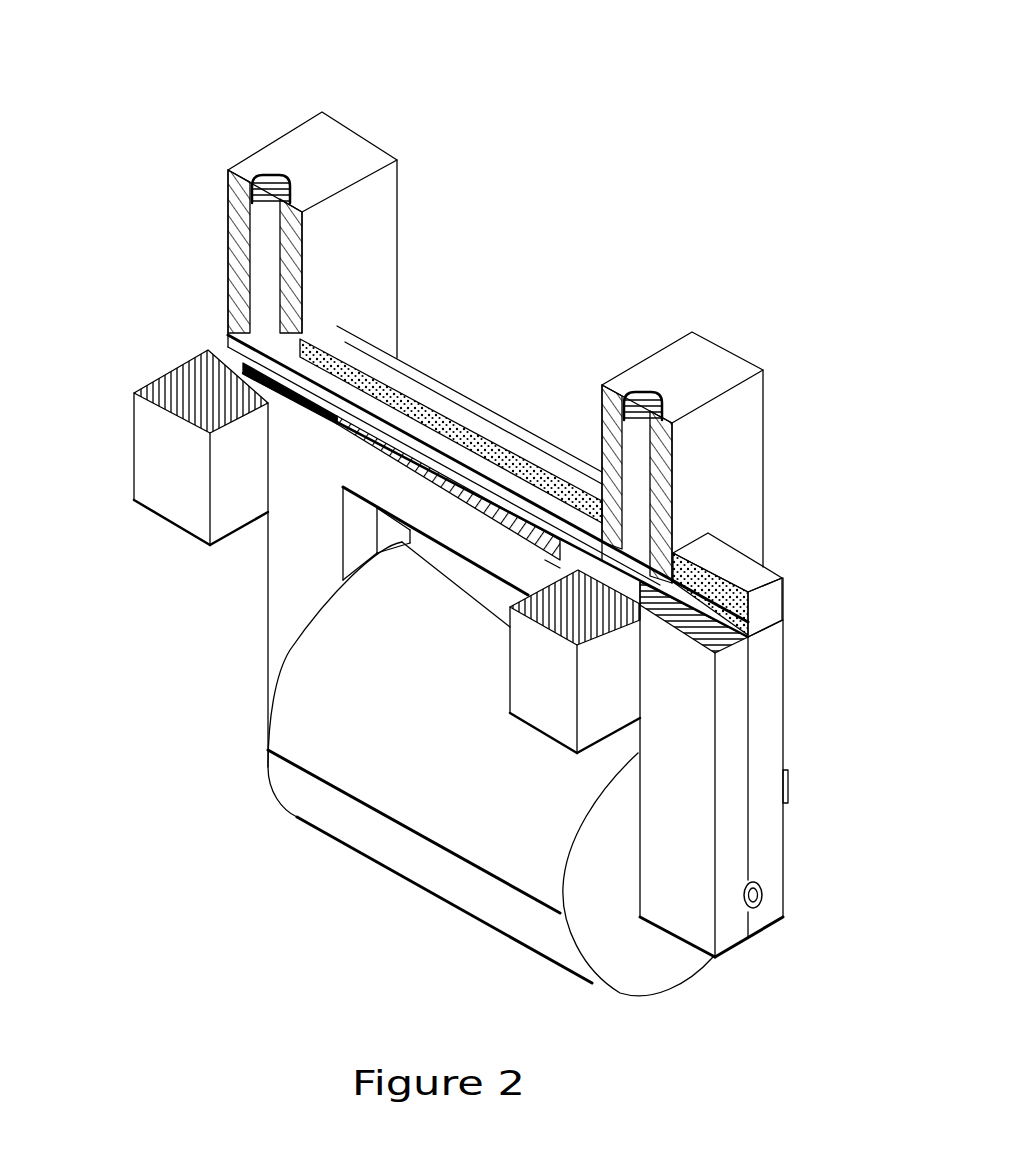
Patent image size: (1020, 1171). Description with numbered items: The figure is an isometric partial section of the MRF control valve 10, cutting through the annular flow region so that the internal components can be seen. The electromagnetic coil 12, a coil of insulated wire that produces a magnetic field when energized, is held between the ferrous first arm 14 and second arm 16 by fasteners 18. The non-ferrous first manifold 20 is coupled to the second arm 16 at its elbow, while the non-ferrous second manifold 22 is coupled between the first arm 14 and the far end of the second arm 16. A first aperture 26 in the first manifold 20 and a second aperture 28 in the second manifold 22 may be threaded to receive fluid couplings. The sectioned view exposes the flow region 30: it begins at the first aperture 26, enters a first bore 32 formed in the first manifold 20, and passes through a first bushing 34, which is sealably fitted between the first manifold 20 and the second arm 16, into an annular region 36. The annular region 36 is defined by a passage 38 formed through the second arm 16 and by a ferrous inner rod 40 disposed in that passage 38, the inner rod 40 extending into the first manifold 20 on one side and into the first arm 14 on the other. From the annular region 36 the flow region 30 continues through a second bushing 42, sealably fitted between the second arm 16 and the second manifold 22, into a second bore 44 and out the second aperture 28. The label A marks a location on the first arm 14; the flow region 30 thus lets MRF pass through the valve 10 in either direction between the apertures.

The MRF control valve 10 is at (556, 104).
The electromagnetic coil 12 is at (303, 727).
The first arm 14 is at (770, 700).
The second arm 16 is at (287, 581).
The fasteners 18 is at (762, 908).
The first manifold 20 is at (148, 456).
The second manifold 22 is at (738, 452).
The first aperture 26 is at (262, 172).
The second aperture 28 is at (645, 388).
The flow region 30 is at (440, 420).
The first bore 32 is at (262, 270).
The first bushing 34 is at (337, 322).
The annular region 36 is at (240, 346).
The passage 38 is at (385, 392).
The inner rod 40 is at (718, 620).
The second bushing 42 is at (553, 564).
The second bore 44 is at (636, 500).
The surface A is at (752, 820).